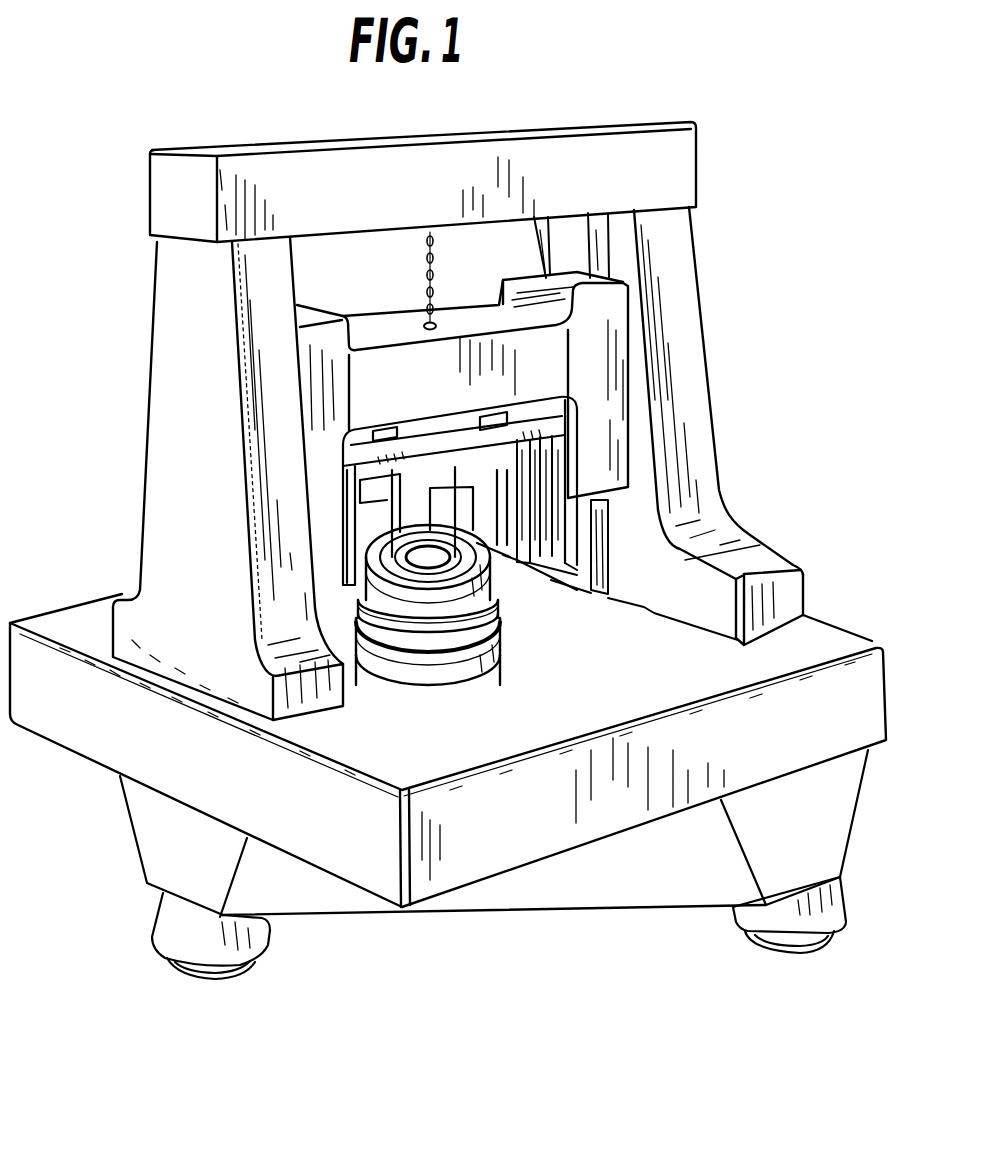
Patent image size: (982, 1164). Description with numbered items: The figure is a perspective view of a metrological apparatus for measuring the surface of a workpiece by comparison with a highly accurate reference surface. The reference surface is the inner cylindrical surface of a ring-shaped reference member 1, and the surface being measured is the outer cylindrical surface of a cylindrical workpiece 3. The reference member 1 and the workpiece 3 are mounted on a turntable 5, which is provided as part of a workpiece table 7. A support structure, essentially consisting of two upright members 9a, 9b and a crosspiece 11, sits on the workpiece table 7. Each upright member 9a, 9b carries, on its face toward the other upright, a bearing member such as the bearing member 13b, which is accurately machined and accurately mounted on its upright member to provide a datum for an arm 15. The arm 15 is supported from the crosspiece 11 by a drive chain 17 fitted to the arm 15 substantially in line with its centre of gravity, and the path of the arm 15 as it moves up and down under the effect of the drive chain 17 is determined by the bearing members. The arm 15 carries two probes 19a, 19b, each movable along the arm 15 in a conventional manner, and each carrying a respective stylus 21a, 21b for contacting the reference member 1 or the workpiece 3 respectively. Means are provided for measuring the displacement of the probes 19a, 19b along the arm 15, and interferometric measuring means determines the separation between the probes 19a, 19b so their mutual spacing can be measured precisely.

The reference member 1 is at (415, 607).
The workpiece 3 is at (420, 560).
The turntable 5 is at (462, 635).
The workpiece table 7 is at (448, 786).
The upright member 9a is at (167, 412).
The upright member 9b is at (683, 402).
The crosspiece 11 is at (167, 200).
The bearing member 13b is at (575, 243).
The arm 15 is at (577, 358).
The drive chain 17 is at (423, 278).
The probe 19a is at (384, 487).
The probe 19b is at (492, 470).
The stylus 21a is at (430, 505).
The stylus 21b is at (480, 503).